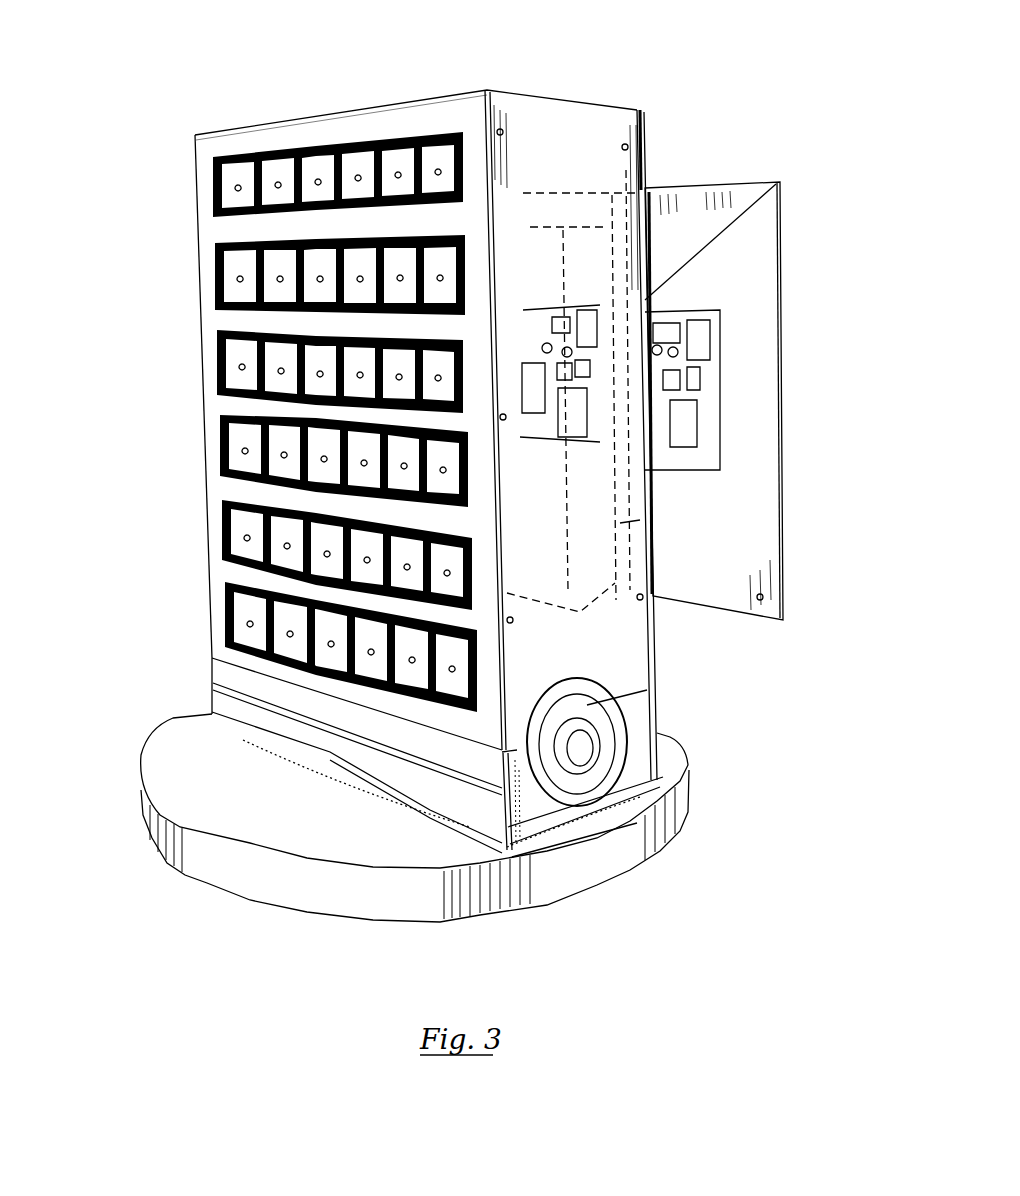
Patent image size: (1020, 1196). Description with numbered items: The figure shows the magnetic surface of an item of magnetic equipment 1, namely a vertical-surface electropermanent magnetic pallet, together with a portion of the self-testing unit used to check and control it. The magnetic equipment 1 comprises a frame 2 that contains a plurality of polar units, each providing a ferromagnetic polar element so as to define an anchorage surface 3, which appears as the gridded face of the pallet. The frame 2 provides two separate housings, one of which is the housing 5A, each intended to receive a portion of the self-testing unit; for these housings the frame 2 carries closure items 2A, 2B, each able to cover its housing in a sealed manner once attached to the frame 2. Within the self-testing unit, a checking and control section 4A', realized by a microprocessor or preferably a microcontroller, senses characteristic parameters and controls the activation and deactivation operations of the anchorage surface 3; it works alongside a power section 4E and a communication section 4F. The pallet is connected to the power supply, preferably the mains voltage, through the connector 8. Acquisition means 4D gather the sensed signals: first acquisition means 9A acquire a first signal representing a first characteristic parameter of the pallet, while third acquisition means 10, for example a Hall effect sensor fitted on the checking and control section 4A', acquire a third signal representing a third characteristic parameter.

The magnetic equipment 1 is at (660, 75).
The frame 2 is at (660, 271).
The closure item 2A is at (785, 208).
The closure item 2B is at (662, 127).
The anchorage surface 3 is at (190, 443).
The checking and control section 4A' is at (682, 244).
The acquisition means 4D is at (446, 217).
The power section 4E is at (776, 184).
The communication section 4F is at (523, 360).
The housing 5A is at (620, 523).
The connector 8 is at (603, 767).
The first acquisition means 9A is at (443, 213).
The third acquisition means 10 is at (720, 353).